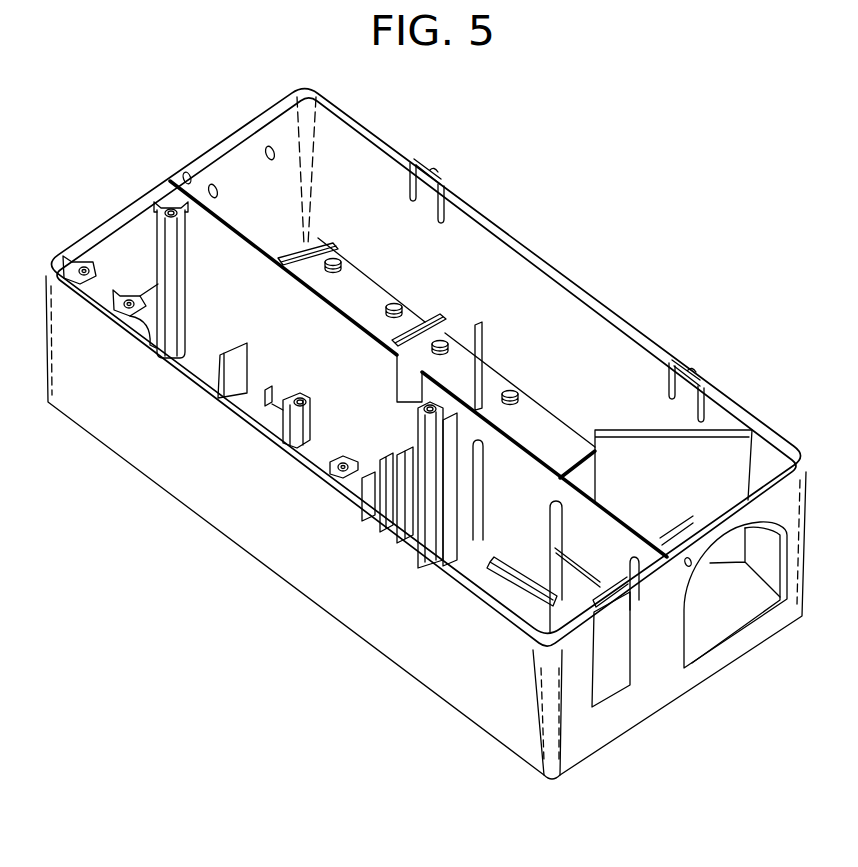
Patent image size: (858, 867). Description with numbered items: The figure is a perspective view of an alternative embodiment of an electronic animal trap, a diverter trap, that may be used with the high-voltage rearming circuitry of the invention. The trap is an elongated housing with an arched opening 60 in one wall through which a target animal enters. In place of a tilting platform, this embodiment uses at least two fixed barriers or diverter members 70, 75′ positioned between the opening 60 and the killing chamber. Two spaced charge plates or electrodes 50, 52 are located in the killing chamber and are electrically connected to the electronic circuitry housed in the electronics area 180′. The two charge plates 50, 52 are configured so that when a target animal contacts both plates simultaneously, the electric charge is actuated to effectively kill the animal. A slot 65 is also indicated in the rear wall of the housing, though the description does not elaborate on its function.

The slot in rear wall 65 is at (308, 252).
The charge plate 52 is at (374, 309).
The diverter member 75′ is at (486, 375).
The charge plate 50 is at (557, 450).
The diverter member 70 is at (678, 504).
The electronics area 180′ is at (246, 397).
The opening 60 is at (743, 625).